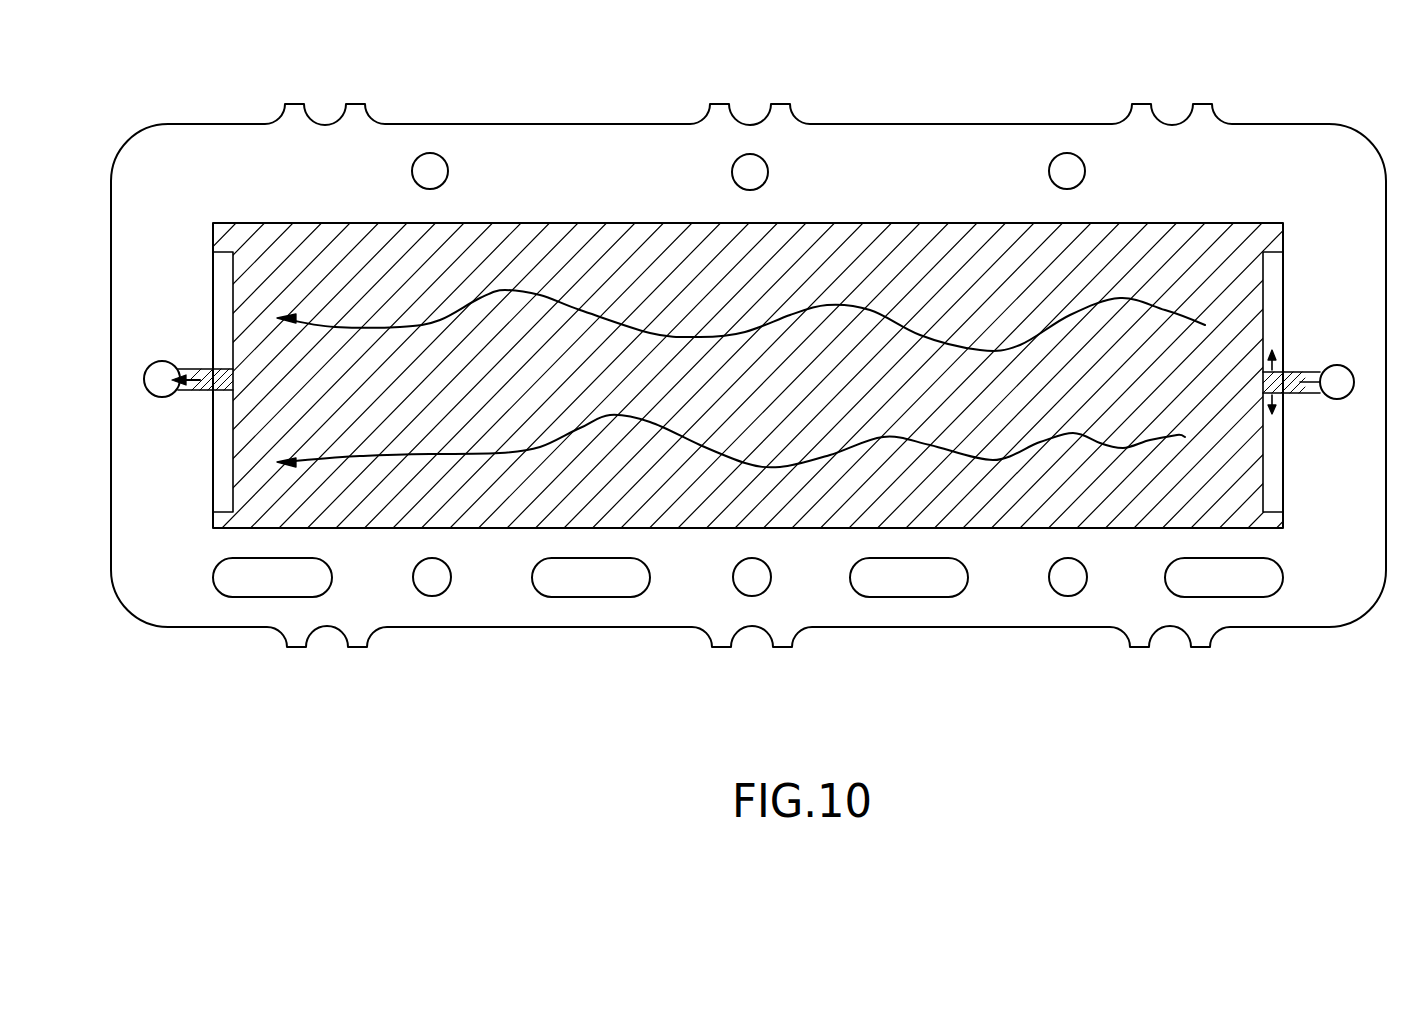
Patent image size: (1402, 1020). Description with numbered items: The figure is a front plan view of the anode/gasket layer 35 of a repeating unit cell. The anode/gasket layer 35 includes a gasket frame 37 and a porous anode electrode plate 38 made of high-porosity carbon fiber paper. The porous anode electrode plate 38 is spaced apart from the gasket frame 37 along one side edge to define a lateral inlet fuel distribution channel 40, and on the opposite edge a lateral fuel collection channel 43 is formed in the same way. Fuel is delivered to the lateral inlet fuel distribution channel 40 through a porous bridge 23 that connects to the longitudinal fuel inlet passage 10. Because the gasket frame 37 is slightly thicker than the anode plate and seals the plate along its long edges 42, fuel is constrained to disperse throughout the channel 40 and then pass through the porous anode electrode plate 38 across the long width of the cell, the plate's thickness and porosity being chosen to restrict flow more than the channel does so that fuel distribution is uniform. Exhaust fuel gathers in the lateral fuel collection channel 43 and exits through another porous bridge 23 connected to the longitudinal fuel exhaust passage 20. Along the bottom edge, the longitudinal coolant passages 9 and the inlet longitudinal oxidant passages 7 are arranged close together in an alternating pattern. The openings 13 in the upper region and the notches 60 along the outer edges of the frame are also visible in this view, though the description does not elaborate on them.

The anode/gasket layer 35 is at (224, 84).
The gasket frame 37 is at (590, 140).
The porous anode electrode plate 38 is at (1190, 246).
The lateral inlet fuel distribution channel 40 is at (1272, 290).
The long edges 42 is at (928, 224).
The lateral fuel collection channel 43 is at (226, 464).
The mounting notch 60 is at (350, 104).
The hole 13 is at (446, 163).
The inlet longitudinal oxidant passages 7 is at (430, 596).
The longitudinal coolant passages 9 is at (232, 598).
The longitudinal fuel exhaust passage 20 is at (160, 361).
The longitudinal fuel inlet passage 10 is at (1335, 362).
The porous bridge 23 is at (198, 369).